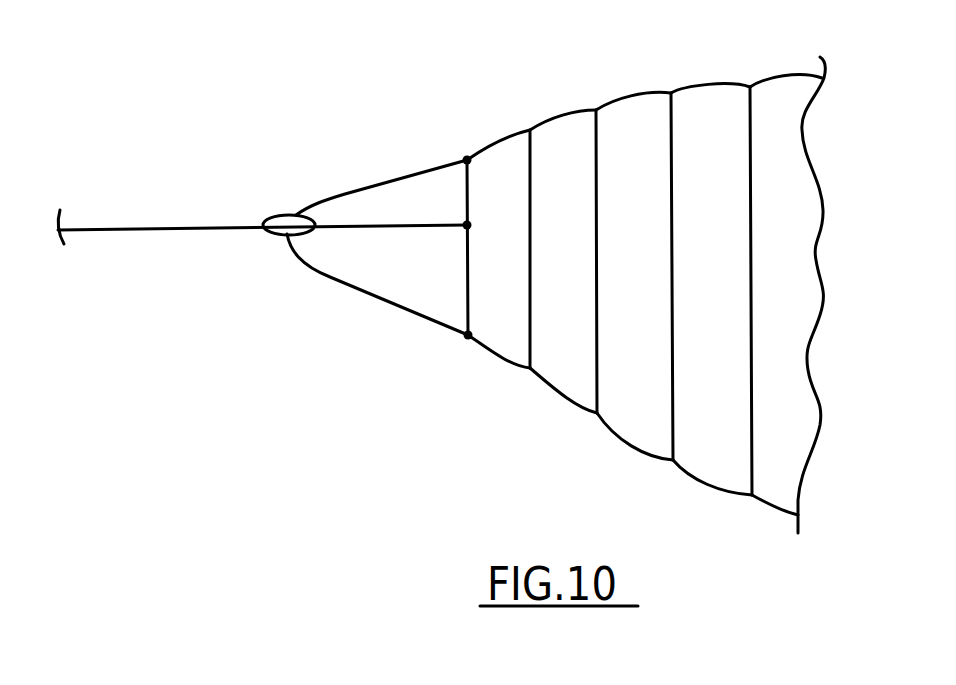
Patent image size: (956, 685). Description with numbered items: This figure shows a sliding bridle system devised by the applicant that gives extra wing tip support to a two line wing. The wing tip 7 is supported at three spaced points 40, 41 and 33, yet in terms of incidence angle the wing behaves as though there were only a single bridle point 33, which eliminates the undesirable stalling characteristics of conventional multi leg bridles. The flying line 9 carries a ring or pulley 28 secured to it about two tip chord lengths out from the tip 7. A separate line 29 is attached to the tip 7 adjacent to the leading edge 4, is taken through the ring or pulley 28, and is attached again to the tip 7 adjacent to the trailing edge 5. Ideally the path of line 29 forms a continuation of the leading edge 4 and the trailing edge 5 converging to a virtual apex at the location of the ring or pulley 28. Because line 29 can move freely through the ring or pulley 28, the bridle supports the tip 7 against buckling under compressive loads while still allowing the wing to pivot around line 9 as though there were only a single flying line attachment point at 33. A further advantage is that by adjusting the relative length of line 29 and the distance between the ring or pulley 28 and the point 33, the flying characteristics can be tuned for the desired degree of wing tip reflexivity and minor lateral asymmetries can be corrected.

The leading edge 4 is at (628, 93).
The trailing edge 5 is at (630, 454).
The tip 7 is at (466, 288).
The line 9 is at (178, 232).
The ring or pulley 28 is at (278, 214).
The line 29 is at (428, 318).
The bridle point 33 is at (471, 222).
The spaced point 40 is at (467, 153).
The spaced point 41 is at (466, 343).